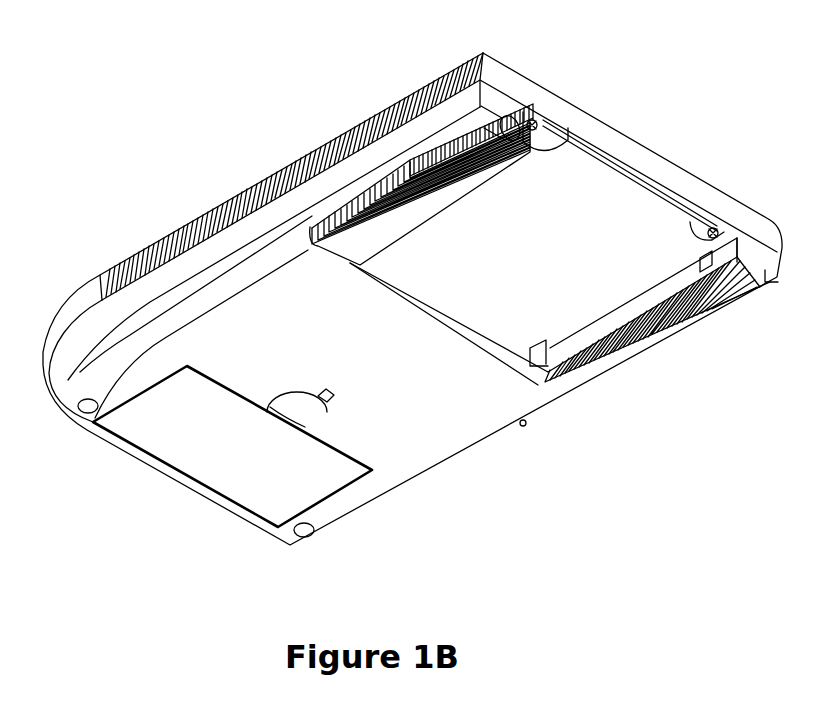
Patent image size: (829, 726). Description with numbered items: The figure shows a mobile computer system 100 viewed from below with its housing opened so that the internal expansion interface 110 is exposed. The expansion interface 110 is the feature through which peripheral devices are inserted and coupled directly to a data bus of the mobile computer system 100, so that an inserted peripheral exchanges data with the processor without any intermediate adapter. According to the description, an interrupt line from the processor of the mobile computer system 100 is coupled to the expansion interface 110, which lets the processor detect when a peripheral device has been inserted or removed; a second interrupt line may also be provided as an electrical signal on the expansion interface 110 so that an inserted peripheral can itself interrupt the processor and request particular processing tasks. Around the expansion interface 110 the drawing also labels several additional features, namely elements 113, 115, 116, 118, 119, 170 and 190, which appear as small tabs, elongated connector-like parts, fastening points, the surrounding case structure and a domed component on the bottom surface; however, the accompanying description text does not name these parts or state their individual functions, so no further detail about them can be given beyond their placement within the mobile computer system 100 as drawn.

The mobile computer system 100 is at (338, 593).
The expansion interface 110 is at (543, 290).
The tab 113 is at (532, 352).
The connector 115 is at (405, 240).
The tab 116 is at (700, 263).
The screw boss 118 is at (545, 130).
The screw 119 is at (530, 112).
The case 170 is at (634, 167).
The dome switch 190 is at (332, 396).